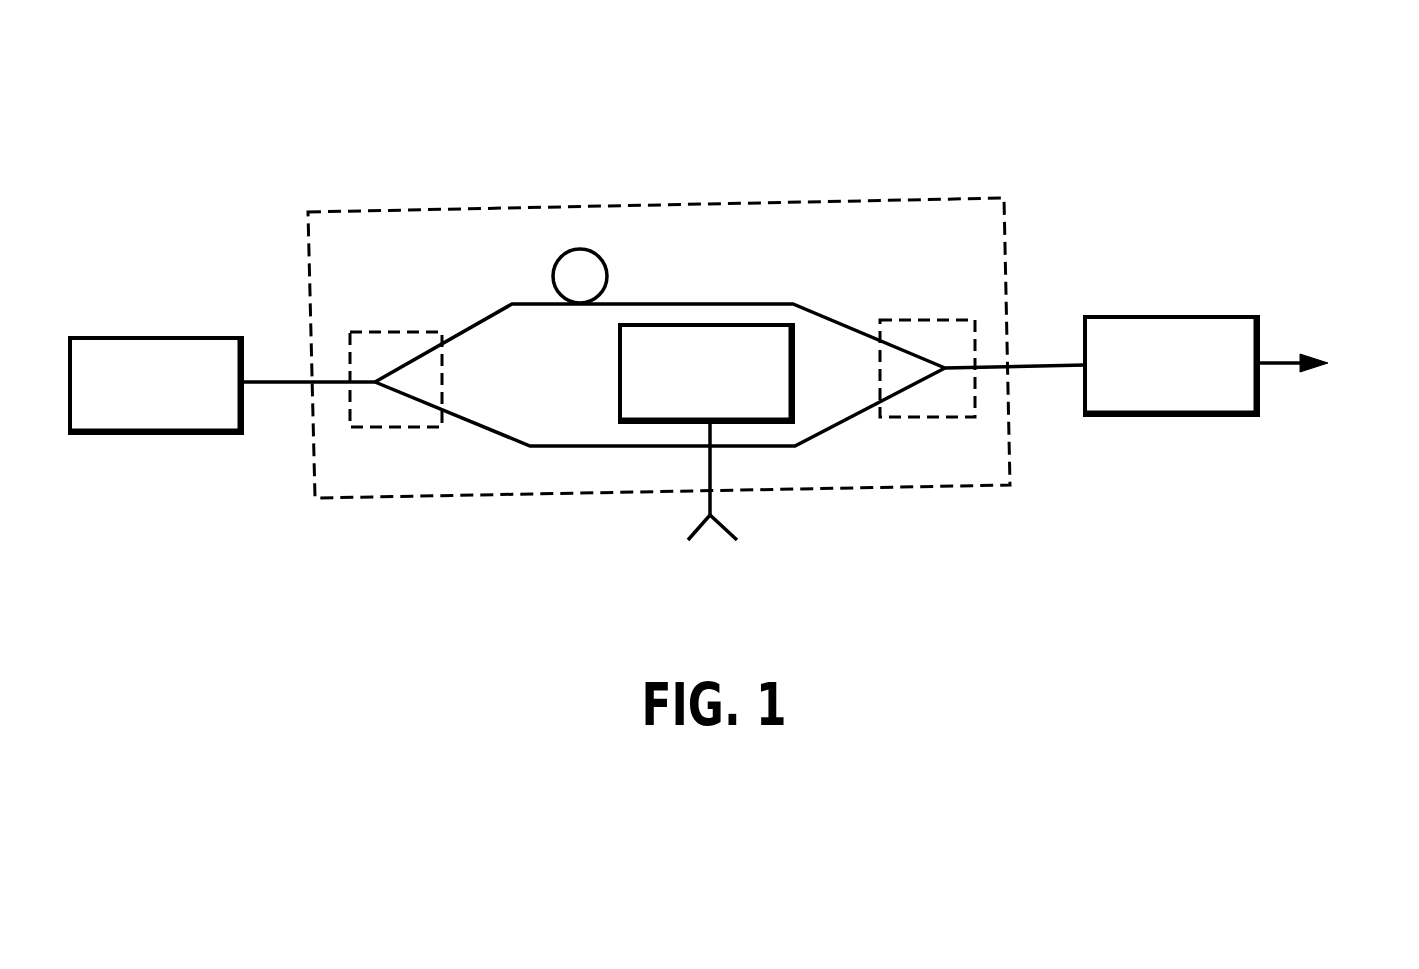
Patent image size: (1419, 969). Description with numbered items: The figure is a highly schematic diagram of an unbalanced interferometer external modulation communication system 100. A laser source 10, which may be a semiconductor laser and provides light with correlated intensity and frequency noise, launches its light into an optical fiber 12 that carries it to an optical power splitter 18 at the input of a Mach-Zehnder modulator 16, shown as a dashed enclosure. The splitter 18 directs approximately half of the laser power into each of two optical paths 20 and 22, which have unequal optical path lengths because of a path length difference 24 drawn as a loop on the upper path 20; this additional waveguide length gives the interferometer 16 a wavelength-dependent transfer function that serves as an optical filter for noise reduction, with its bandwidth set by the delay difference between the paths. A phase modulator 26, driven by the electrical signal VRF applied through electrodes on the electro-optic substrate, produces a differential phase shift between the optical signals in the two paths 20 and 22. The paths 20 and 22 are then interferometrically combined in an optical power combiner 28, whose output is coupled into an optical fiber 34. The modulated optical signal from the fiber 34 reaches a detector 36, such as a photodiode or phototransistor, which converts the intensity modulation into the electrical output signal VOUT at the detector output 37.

The unbalanced interferometer external modulation communication system 100 is at (1163, 150).
The laser source 10 is at (150, 338).
The optical fiber 12 is at (265, 382).
The Mach-Zehnder modulator 16 is at (400, 210).
The optical power splitter 18 is at (401, 332).
The first optical path 20 is at (503, 312).
The second optical path 22 is at (510, 442).
The path length difference 24 is at (552, 272).
The phase modulator 26 is at (620, 379).
The optical power combiner 28 is at (930, 320).
The optical fiber 34 is at (1058, 368).
The detector 36 is at (1171, 317).
The detector output 37 is at (1278, 362).